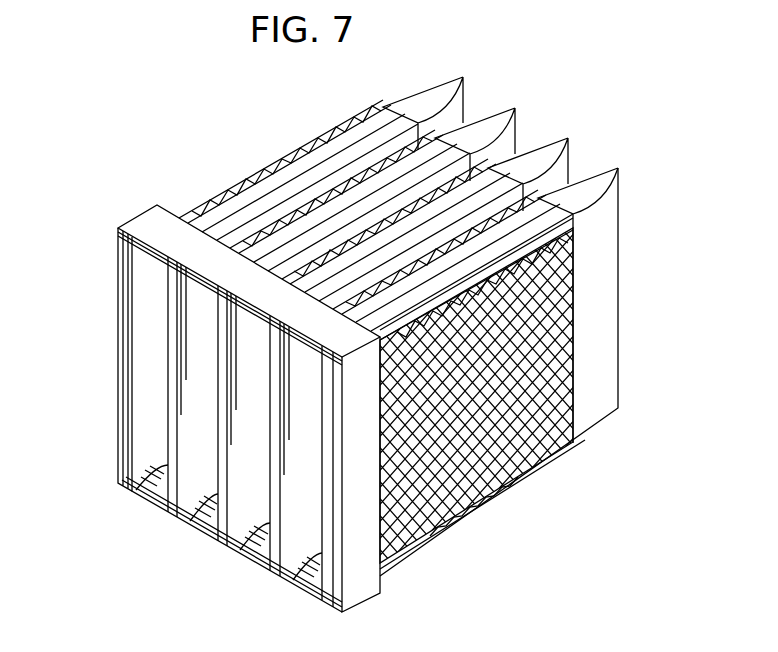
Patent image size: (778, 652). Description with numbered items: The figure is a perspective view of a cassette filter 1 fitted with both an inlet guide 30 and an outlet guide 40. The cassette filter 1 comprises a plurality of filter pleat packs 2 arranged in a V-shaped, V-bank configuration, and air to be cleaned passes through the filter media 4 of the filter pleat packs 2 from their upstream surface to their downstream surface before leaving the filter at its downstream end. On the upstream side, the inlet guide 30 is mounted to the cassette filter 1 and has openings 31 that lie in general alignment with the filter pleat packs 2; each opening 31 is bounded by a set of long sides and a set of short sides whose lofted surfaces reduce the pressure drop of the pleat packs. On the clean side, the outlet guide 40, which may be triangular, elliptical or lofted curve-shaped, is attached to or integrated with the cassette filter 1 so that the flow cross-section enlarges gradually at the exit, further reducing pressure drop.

The cassette filter 1 is at (230, 129).
The filter pleat packs 2 is at (399, 172).
The filter media 4 is at (530, 451).
The inlet guide 30 is at (94, 350).
The openings 31 is at (267, 491).
The outlet guide 40 is at (612, 289).